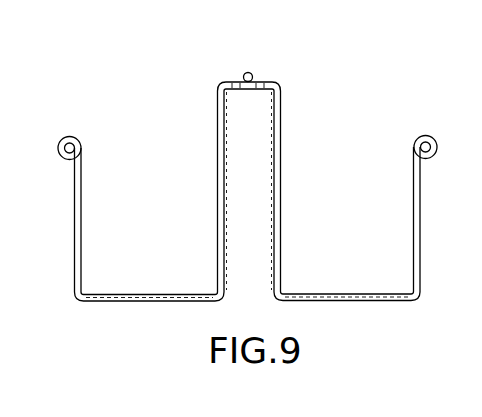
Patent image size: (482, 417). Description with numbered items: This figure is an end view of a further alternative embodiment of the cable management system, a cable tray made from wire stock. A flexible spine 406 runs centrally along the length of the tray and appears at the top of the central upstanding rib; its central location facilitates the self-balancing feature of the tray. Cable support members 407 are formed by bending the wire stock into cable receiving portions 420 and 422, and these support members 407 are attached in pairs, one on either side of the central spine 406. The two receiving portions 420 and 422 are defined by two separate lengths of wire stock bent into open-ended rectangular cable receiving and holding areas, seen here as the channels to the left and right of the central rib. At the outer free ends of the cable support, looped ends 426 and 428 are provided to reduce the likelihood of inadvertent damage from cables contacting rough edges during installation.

The flexible spine 406 is at (248, 72).
The cable support members 407 is at (206, 137).
The cable receiving portion 420 is at (120, 185).
The cable receiving portion 422 is at (340, 156).
The looped end 426 is at (58, 143).
The looped end 428 is at (462, 110).